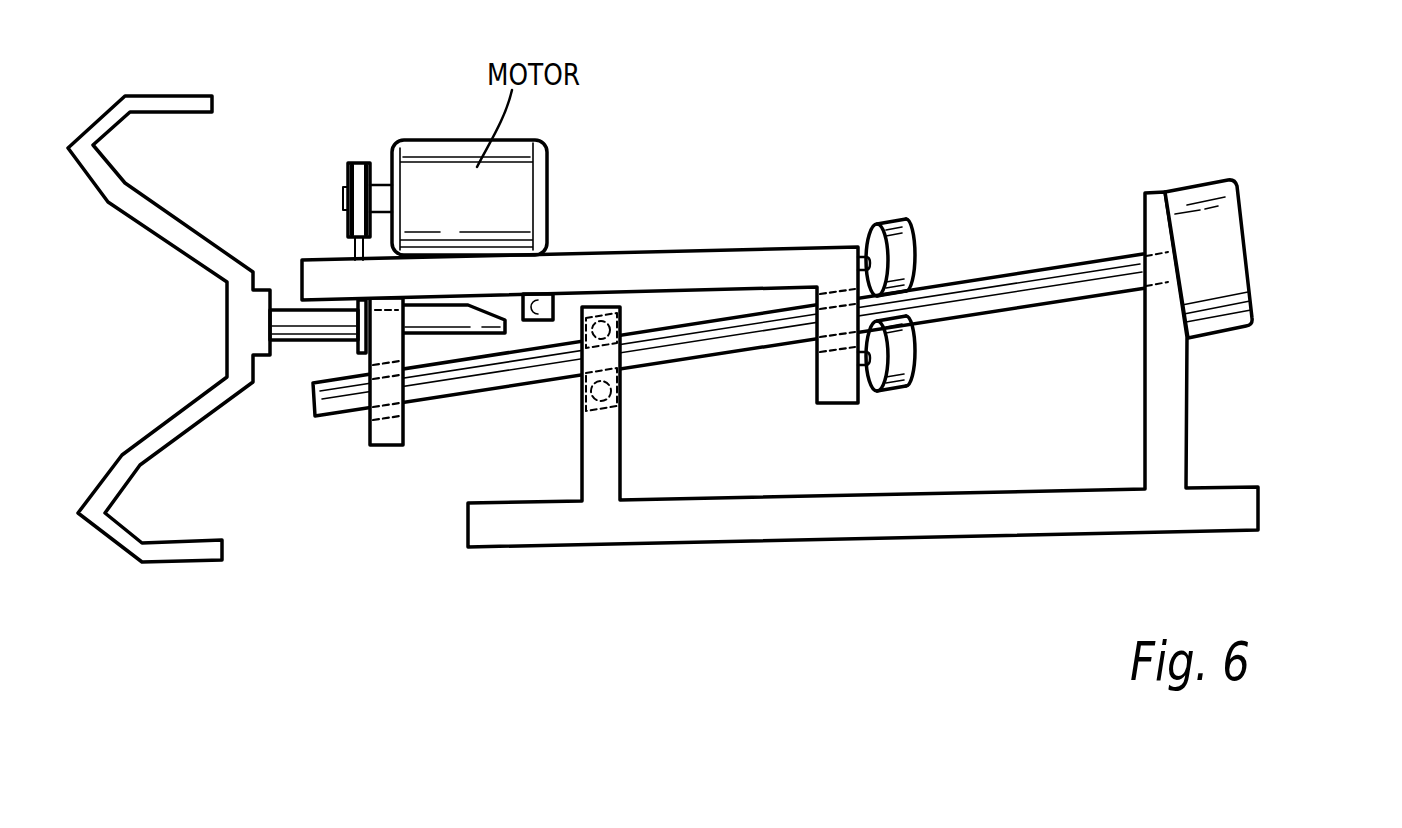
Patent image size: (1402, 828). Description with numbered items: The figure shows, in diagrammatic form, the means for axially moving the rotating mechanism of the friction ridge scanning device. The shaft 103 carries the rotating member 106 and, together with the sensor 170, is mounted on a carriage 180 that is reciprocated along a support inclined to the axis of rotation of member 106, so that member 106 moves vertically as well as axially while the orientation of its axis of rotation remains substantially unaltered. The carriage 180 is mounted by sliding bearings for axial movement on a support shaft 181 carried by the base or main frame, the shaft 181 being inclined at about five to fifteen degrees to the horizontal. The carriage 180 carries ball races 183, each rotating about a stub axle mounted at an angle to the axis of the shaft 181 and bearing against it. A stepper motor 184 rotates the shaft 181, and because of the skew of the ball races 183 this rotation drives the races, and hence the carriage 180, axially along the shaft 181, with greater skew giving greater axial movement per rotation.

The shaft 103 is at (305, 327).
The rotating member 106 is at (202, 245).
The sensor 170 is at (553, 303).
The carriage 180 is at (772, 262).
The support shafts 181 is at (1025, 292).
The ball races 183 is at (906, 258).
The stepper motor 184 is at (1220, 260).